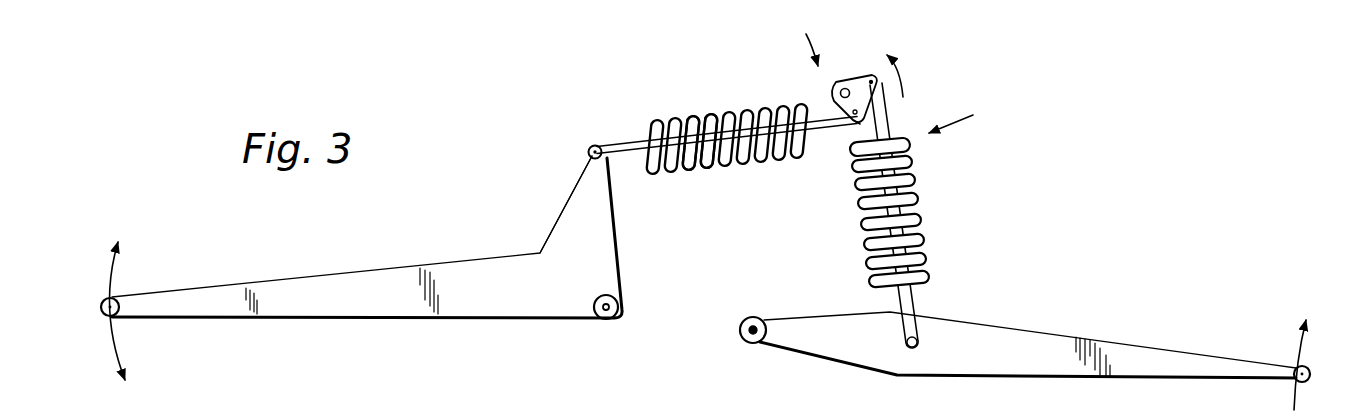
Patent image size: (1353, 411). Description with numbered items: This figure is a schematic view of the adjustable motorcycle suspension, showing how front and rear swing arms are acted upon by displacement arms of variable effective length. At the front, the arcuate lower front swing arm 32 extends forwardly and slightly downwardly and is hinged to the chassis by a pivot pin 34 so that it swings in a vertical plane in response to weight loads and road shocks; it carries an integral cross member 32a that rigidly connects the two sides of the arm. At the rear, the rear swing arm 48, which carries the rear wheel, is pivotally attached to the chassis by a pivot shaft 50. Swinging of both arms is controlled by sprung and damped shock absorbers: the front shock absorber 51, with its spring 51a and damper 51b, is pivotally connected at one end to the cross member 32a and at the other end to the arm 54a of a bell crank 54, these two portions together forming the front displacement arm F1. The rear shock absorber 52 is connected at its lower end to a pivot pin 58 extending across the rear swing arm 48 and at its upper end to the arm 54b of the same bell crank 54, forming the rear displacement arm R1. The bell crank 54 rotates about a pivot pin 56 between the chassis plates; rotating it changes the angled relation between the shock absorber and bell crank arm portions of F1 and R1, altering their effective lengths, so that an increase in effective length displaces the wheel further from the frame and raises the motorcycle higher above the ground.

The lower front swing arm 32 is at (404, 303).
The cross member 32a is at (575, 198).
The pivot pin 34 is at (613, 316).
The rear swing arm 48 is at (1037, 370).
The pivot shaft 50 is at (757, 316).
The front shock absorber 51 is at (672, 100).
The spring 51a is at (712, 117).
The damper 51b is at (703, 168).
The rear shock absorber 52 is at (932, 210).
The bell crank 54 is at (873, 76).
The arm of bell crank 54a is at (848, 119).
The arm of bell crank 54b is at (879, 51).
The pivot pin 56 is at (842, 86).
The pivot pin 58 is at (913, 348).
The front displacement arm F1 is at (793, 45).
The rear displacement arm R1 is at (974, 116).